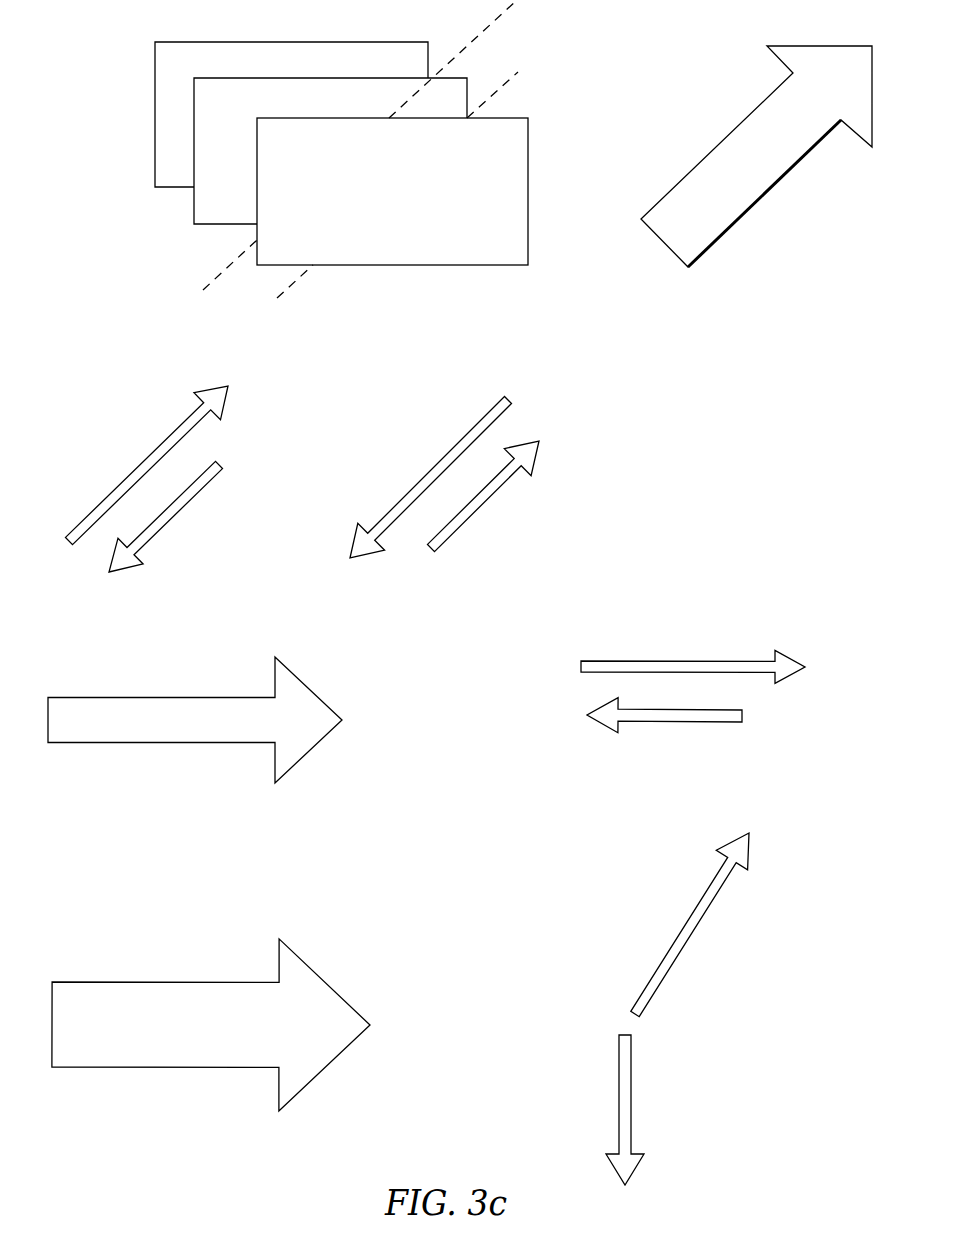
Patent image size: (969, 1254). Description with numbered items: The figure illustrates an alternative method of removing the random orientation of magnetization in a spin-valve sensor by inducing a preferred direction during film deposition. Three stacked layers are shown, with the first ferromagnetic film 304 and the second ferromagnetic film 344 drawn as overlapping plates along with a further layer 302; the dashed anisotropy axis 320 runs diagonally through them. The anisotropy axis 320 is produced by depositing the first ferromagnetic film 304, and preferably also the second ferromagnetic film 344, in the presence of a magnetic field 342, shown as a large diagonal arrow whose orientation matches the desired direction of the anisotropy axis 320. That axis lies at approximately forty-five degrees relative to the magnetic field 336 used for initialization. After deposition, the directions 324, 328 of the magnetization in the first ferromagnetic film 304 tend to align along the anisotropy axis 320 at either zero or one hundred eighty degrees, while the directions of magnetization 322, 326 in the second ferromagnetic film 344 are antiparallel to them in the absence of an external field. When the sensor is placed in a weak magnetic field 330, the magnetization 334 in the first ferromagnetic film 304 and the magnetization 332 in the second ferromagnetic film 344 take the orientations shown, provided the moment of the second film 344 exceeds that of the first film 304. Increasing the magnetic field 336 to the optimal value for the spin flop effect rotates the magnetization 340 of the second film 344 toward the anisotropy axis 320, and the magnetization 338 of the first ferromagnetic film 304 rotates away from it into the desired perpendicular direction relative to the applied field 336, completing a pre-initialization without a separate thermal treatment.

The first plate 302 is at (155, 165).
The first ferromagnetic film 304 is at (194, 210).
The second ferromagnetic film 344 is at (528, 170).
The anisotropy axis 320 is at (508, 7).
The magnetic field 342 is at (777, 182).
The direction of magnetization in second ferromagnetic film 322 is at (132, 468).
The direction of magnetization in first ferromagnetic film 324 is at (173, 517).
The direction of magnetization in second ferromagnetic film 326 is at (427, 472).
The direction of magnetization in first ferromagnetic film 328 is at (480, 508).
The weak magnetic field 330 is at (165, 743).
The magnetization in second ferromagnetic film 332 is at (685, 660).
The magnetization in first ferromagnetic film 334 is at (672, 723).
The magnetic field for initialization 336 is at (167, 980).
The magnetization in first ferromagnetic film 338 is at (632, 1088).
The magnetization of second film 340 is at (693, 933).